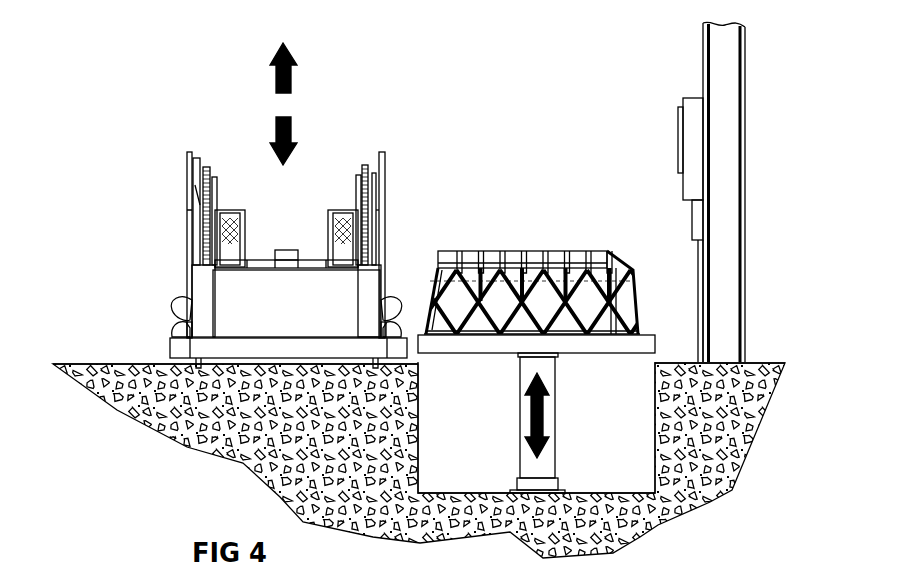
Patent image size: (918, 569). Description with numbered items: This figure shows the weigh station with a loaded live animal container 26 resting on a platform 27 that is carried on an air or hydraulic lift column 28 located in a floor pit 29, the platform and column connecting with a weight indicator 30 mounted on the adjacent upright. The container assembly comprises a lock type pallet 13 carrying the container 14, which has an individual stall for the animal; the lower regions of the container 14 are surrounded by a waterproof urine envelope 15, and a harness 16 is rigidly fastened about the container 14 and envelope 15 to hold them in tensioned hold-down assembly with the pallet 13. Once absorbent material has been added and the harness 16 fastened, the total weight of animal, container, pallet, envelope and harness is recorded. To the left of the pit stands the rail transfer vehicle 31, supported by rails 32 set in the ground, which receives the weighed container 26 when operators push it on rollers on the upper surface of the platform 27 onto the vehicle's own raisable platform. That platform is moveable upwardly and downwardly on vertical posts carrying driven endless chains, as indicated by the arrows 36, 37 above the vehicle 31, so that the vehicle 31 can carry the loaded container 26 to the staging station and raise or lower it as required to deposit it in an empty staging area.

The lock type pallet 13 is at (537, 263).
The container 14 is at (552, 250).
The waterproof envelope 15 is at (528, 264).
The harness 16 is at (597, 272).
The live animal container 26 is at (625, 240).
The platform 27 is at (654, 343).
The air or hydraulic lift column 28 is at (555, 426).
The floor pit 29 is at (640, 483).
The weight indicator 30 is at (683, 98).
The rail transfer vehicle 31 is at (156, 231).
The rails 32 is at (419, 460).
The arrow 36 is at (288, 56).
The arrow 37 is at (289, 157).